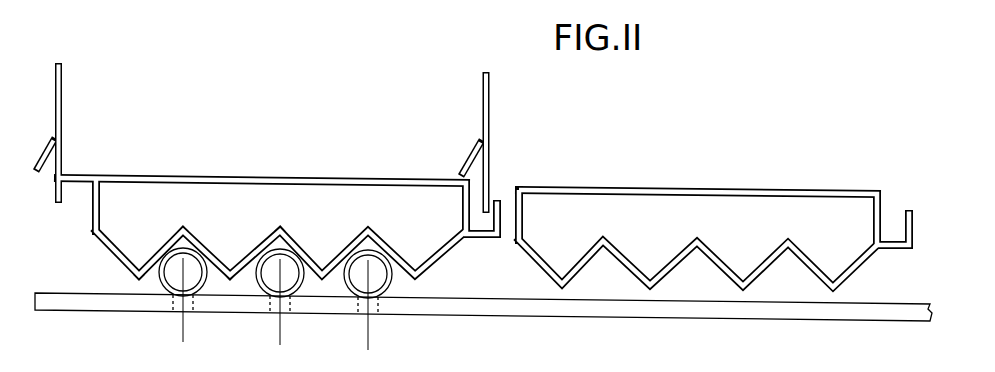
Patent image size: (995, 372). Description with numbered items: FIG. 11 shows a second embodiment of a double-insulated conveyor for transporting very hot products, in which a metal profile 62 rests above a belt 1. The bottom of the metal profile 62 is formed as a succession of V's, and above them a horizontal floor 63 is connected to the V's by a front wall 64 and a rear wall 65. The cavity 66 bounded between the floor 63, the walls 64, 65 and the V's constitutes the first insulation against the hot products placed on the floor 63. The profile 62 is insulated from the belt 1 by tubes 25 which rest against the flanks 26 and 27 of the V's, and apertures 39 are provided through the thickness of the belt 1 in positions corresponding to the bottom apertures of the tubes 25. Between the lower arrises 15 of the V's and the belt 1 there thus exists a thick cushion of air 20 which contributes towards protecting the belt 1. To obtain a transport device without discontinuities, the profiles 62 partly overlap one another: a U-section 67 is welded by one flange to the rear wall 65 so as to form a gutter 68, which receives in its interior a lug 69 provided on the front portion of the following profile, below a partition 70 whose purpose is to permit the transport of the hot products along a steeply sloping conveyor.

The belt 1 is at (845, 318).
The lower arrises 15 is at (228, 279).
The cushion of air 20 is at (622, 288).
The tubes 25 is at (165, 288).
The flank 26 is at (163, 248).
The flank 27 is at (246, 217).
The apertures 39 is at (356, 314).
The metal profile 62 is at (347, 165).
The horizontal floor 63 is at (750, 188).
The front wall 64 is at (93, 216).
The rear wall 65 is at (461, 212).
The cavity 66 is at (295, 202).
The U-section 67 is at (912, 230).
The gutter 68 is at (488, 225).
The lug 69 is at (53, 196).
The partition 70 is at (52, 92).